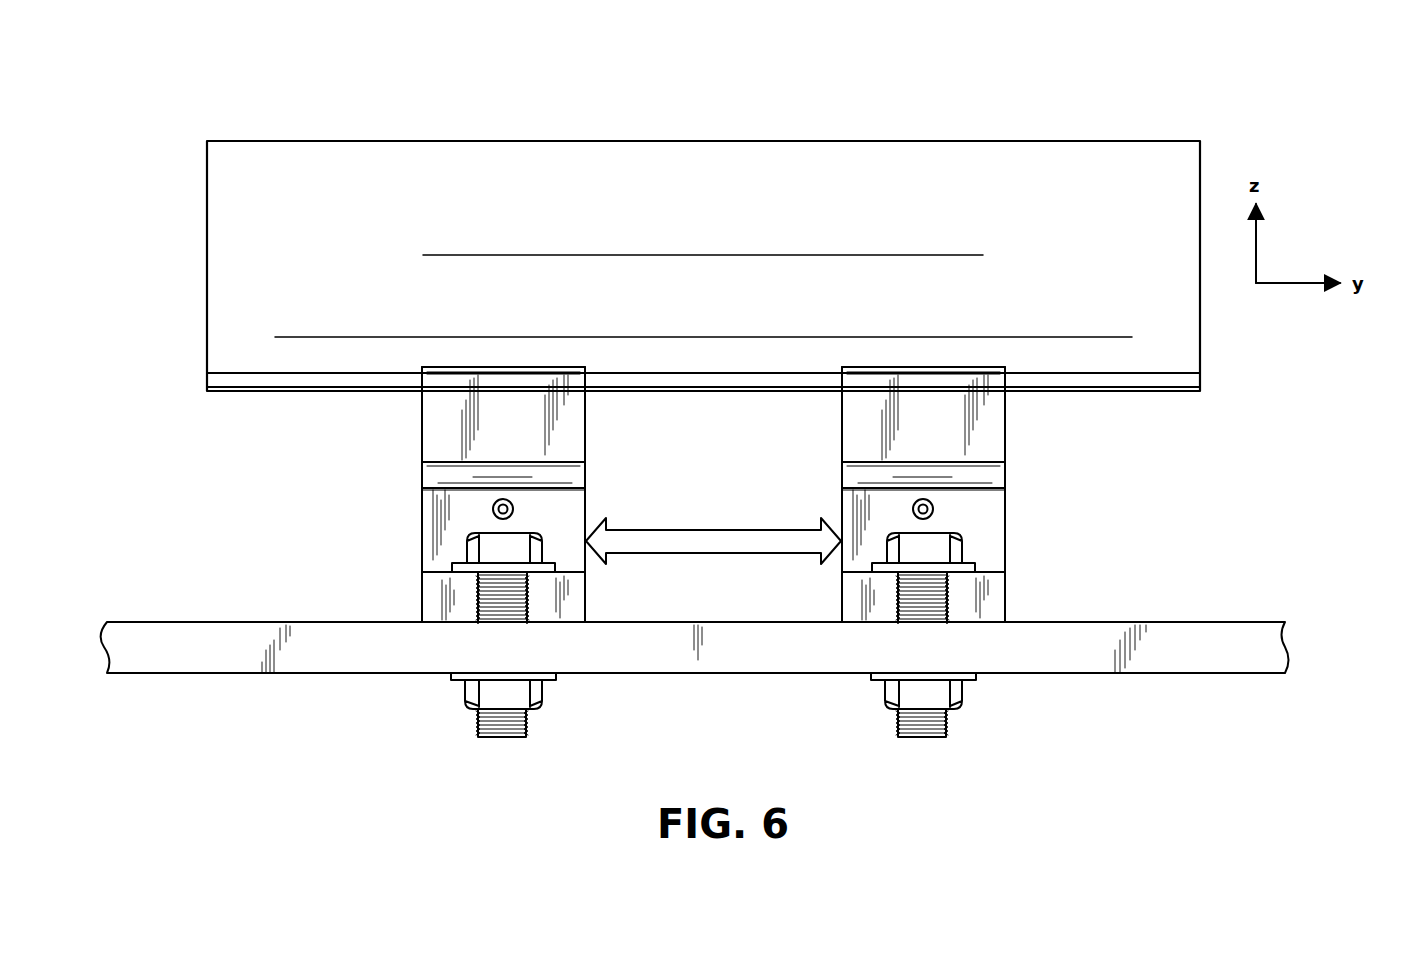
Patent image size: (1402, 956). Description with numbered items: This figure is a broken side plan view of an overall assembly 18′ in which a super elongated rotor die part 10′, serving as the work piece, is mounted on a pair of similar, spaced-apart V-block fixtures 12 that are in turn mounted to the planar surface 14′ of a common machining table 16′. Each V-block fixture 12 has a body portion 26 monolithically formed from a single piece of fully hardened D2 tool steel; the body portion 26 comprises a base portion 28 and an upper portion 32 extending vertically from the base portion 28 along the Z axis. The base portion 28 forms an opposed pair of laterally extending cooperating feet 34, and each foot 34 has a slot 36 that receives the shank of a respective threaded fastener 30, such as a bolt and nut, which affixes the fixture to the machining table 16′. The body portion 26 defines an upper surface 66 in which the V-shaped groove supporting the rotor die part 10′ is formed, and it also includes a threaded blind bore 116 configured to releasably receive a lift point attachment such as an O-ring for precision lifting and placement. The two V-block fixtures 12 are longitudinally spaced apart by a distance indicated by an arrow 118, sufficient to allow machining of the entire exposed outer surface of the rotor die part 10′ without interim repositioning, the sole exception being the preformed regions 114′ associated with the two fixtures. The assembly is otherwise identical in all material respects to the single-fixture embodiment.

The elongated rotor die part 10′ is at (786, 136).
The overall assembly 18′ is at (1228, 116).
The planar surface 14′ is at (1245, 622).
The common machining table 16′ is at (1258, 655).
The V-block fixture 12 is at (591, 508).
The body portion 26 is at (419, 502).
The base portion 28 is at (462, 585).
The threaded fastener 30 is at (500, 545).
The upper portion 32 is at (565, 433).
The foot 34 is at (548, 598).
The slot 36 is at (478, 600).
The upper surface 66 is at (438, 366).
The preformed region 114′ is at (516, 352).
The threaded blind bore 116 is at (500, 500).
The arrow 118 is at (723, 540).